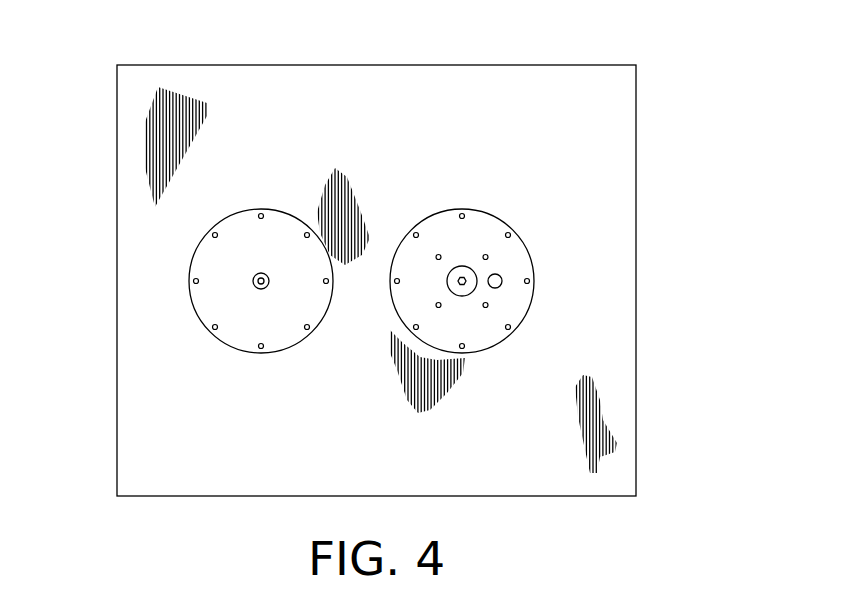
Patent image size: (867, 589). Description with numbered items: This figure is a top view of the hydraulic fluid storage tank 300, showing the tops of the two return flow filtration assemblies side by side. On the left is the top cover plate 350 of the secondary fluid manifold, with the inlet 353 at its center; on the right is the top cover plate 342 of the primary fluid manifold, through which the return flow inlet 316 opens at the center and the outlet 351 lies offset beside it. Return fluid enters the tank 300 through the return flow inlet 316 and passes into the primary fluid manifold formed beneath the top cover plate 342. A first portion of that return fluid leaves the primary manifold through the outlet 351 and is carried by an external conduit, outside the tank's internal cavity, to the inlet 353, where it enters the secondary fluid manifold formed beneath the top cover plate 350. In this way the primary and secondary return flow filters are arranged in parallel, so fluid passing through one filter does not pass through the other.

The hydraulic fluid storage tank 300 is at (716, 112).
The top cover plate 350 is at (285, 227).
The inlet 353 is at (253, 280).
The top cover plate 342 is at (522, 238).
The return flow inlet 316 is at (467, 266).
The outlet 351 is at (495, 282).